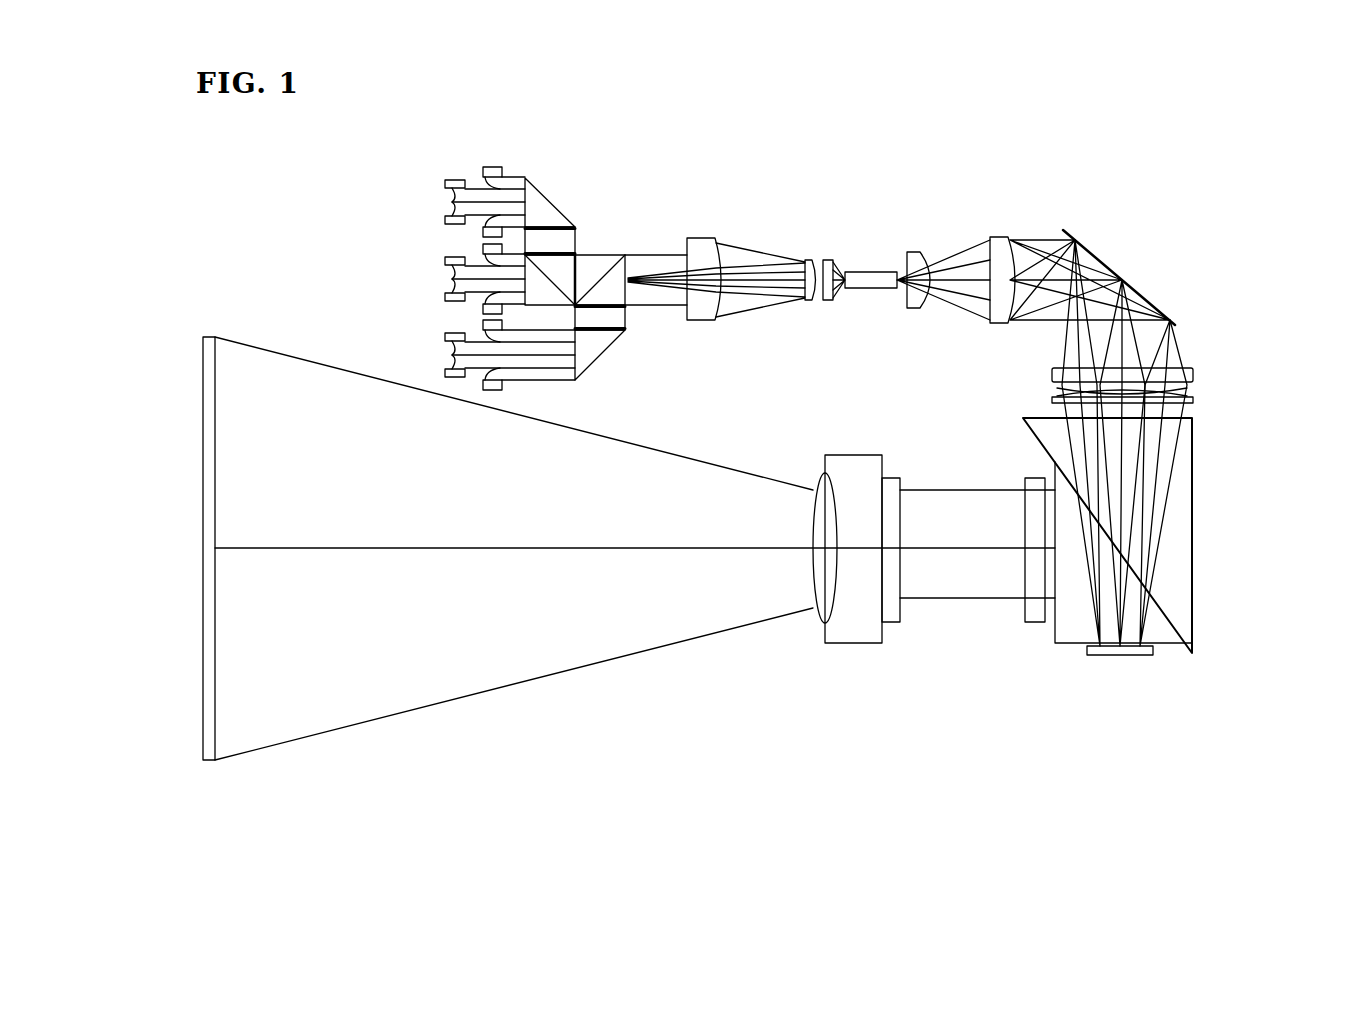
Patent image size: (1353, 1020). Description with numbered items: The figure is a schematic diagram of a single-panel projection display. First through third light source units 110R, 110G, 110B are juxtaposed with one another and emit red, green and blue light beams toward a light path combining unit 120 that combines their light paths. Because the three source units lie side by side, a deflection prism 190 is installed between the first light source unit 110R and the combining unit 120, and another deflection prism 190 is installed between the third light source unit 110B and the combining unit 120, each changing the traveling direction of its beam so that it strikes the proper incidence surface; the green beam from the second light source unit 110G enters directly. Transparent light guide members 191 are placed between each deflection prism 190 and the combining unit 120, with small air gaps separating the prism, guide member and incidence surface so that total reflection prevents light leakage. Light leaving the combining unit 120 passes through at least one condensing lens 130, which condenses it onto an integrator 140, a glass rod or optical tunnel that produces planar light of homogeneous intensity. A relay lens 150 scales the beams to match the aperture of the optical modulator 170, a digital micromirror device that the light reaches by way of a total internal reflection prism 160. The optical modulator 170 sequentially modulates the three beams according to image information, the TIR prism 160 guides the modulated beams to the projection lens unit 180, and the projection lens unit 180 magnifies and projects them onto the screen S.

The first light source unit 110R is at (445, 203).
The second light source unit 110G is at (445, 280).
The third light source unit 110B is at (445, 356).
The light path combining unit 120 is at (603, 253).
The condensing lens 130 is at (840, 228).
The integrator 140 is at (868, 289).
The relay lens 150 is at (1050, 195).
The total internal reflection (TIR) prism 160 is at (1193, 541).
The optical modulator 170 is at (1134, 657).
The projection lens unit 180 is at (1043, 670).
The deflection prism 190 is at (549, 196).
The light guide member 191 is at (577, 238).
The screen S is at (203, 727).